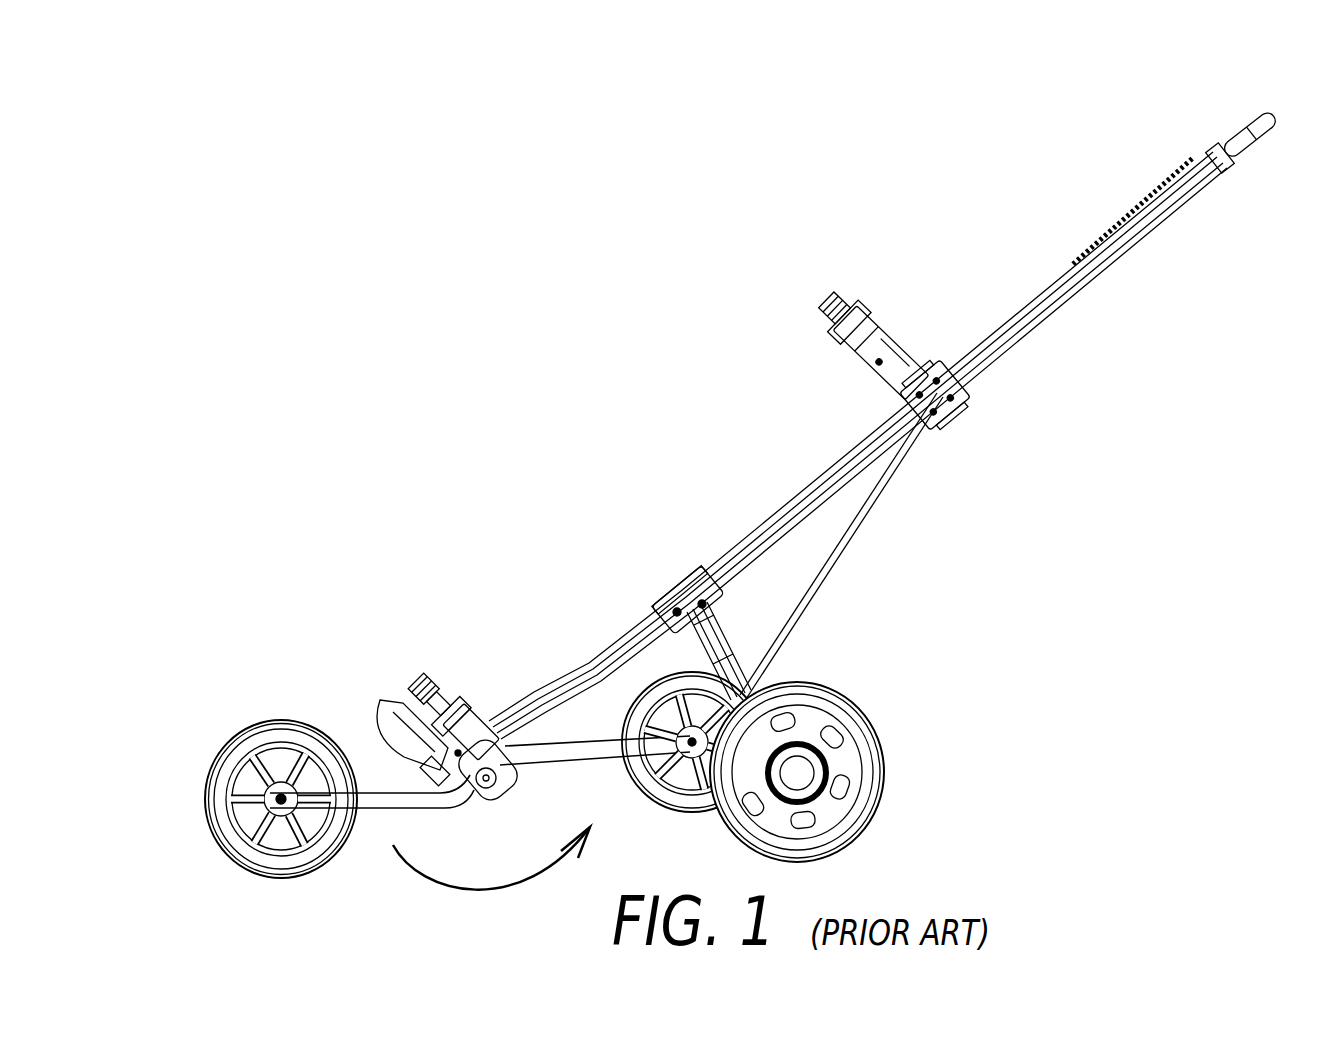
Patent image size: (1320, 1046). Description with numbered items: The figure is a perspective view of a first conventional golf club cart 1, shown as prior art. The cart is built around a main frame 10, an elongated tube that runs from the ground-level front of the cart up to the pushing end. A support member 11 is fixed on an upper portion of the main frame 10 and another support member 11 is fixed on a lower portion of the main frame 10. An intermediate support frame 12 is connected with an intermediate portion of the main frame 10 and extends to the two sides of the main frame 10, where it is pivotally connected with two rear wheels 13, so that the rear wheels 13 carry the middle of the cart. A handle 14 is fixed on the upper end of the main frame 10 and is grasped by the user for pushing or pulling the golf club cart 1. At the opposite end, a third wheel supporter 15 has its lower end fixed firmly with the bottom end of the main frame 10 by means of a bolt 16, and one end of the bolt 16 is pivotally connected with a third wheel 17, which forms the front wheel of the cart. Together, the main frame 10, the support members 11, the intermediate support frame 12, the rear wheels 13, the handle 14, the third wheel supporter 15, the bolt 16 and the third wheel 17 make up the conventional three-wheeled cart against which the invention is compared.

The golf club cart 1 is at (895, 573).
The main frame 10 is at (778, 514).
The support member 11 is at (845, 300).
The intermediate support frame 12 is at (713, 657).
The rear wheels 13 is at (867, 773).
The handle 14 is at (1242, 130).
The third wheel supporter 15 is at (380, 800).
The bolt 16 is at (487, 768).
The third wheel 17 is at (223, 780).